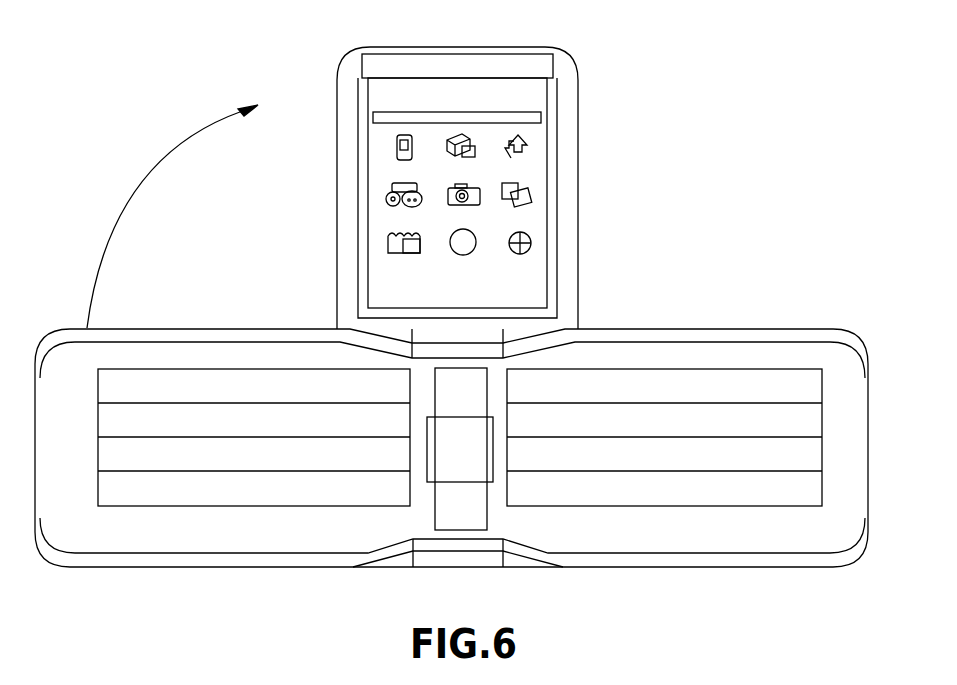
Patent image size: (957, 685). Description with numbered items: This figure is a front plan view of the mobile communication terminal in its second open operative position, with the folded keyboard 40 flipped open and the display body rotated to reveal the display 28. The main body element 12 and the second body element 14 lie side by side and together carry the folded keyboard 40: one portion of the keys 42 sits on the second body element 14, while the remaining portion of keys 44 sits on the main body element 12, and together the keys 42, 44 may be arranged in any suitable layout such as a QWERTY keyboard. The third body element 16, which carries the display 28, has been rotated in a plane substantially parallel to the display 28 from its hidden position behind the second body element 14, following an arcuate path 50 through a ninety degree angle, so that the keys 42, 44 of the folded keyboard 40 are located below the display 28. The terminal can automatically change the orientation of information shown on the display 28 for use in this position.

The main body element 12 is at (727, 330).
The second body element 14 is at (173, 569).
The third body element 16 is at (573, 178).
The display 28 is at (513, 105).
The folded keyboard 40 is at (570, 602).
The one portion of the keys 42 is at (98, 490).
The remaining portion of keys 44 is at (822, 493).
The arcuate path 50 is at (150, 192).